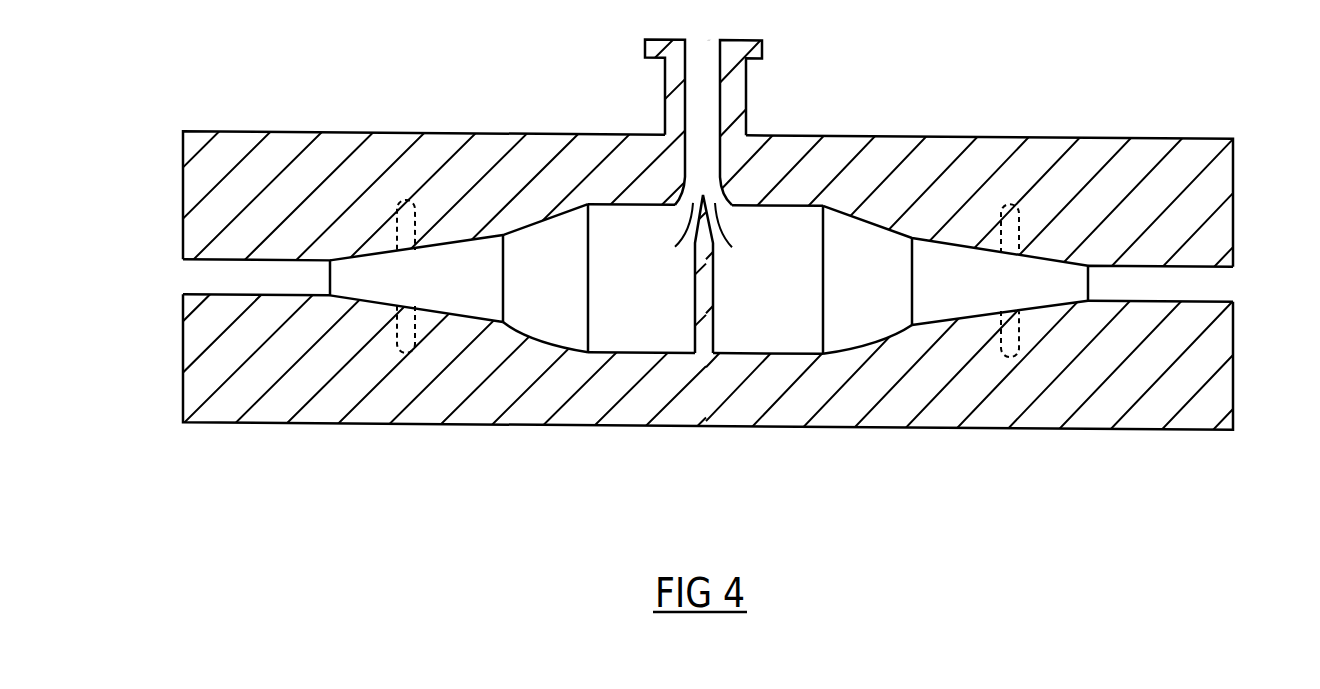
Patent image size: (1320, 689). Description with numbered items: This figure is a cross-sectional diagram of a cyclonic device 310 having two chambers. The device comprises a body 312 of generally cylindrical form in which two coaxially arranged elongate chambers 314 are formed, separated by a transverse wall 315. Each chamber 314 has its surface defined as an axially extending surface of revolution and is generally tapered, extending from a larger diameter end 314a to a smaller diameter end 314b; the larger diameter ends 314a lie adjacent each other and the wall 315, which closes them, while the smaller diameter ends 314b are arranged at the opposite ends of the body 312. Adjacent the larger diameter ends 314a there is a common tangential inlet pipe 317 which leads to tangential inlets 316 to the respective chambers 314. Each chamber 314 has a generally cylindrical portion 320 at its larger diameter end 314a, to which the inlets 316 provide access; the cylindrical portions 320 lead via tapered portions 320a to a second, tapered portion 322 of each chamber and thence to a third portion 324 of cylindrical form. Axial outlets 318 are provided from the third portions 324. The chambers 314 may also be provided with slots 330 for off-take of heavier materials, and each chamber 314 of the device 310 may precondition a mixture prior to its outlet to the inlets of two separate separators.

The cyclonic device 310 is at (988, 135).
The body 312 is at (837, 147).
The chamber 314 is at (626, 316).
The larger diameter end 314a is at (740, 173).
The smaller diameter end 314b is at (242, 261).
The transverse wall 315 is at (704, 325).
The tangential inlet 316 is at (681, 240).
The common tangential inlet pipe 317 is at (708, 97).
The outlet 318 is at (188, 279).
The cylindrical portion 320 is at (667, 353).
The tapered portion 320a is at (542, 348).
The second tapered portion 322 is at (375, 305).
The third portion 324 is at (240, 298).
The slot 330 is at (413, 340).